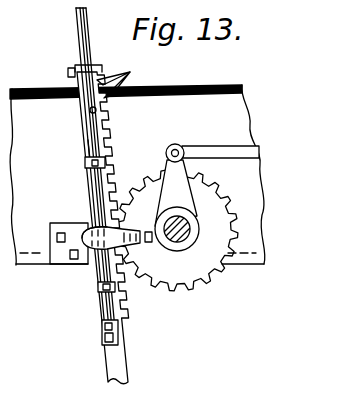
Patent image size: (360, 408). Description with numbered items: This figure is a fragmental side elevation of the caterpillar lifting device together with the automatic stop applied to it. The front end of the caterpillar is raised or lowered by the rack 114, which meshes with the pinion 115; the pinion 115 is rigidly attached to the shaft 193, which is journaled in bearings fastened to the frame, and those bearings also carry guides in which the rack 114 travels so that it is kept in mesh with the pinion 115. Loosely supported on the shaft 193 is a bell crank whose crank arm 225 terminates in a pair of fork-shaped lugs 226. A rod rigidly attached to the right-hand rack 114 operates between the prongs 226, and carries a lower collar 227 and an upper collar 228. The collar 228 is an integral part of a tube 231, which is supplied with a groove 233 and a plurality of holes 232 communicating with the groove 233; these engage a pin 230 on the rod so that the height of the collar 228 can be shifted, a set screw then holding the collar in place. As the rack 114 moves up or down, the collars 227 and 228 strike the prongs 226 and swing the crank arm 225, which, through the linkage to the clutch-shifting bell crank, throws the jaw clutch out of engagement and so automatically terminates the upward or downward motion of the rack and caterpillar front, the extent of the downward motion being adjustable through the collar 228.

The rack 114 is at (112, 133).
The pinion 115 is at (215, 200).
The shaft 193 is at (196, 228).
The crank arm 225 is at (128, 250).
The fork-shaped lugs 226 is at (88, 248).
The collar 227 is at (98, 290).
The collar 228 is at (85, 163).
The pin 230 is at (90, 111).
The tube 231 is at (68, 75).
The holes 232 is at (130, 72).
The groove 233 is at (88, 145).